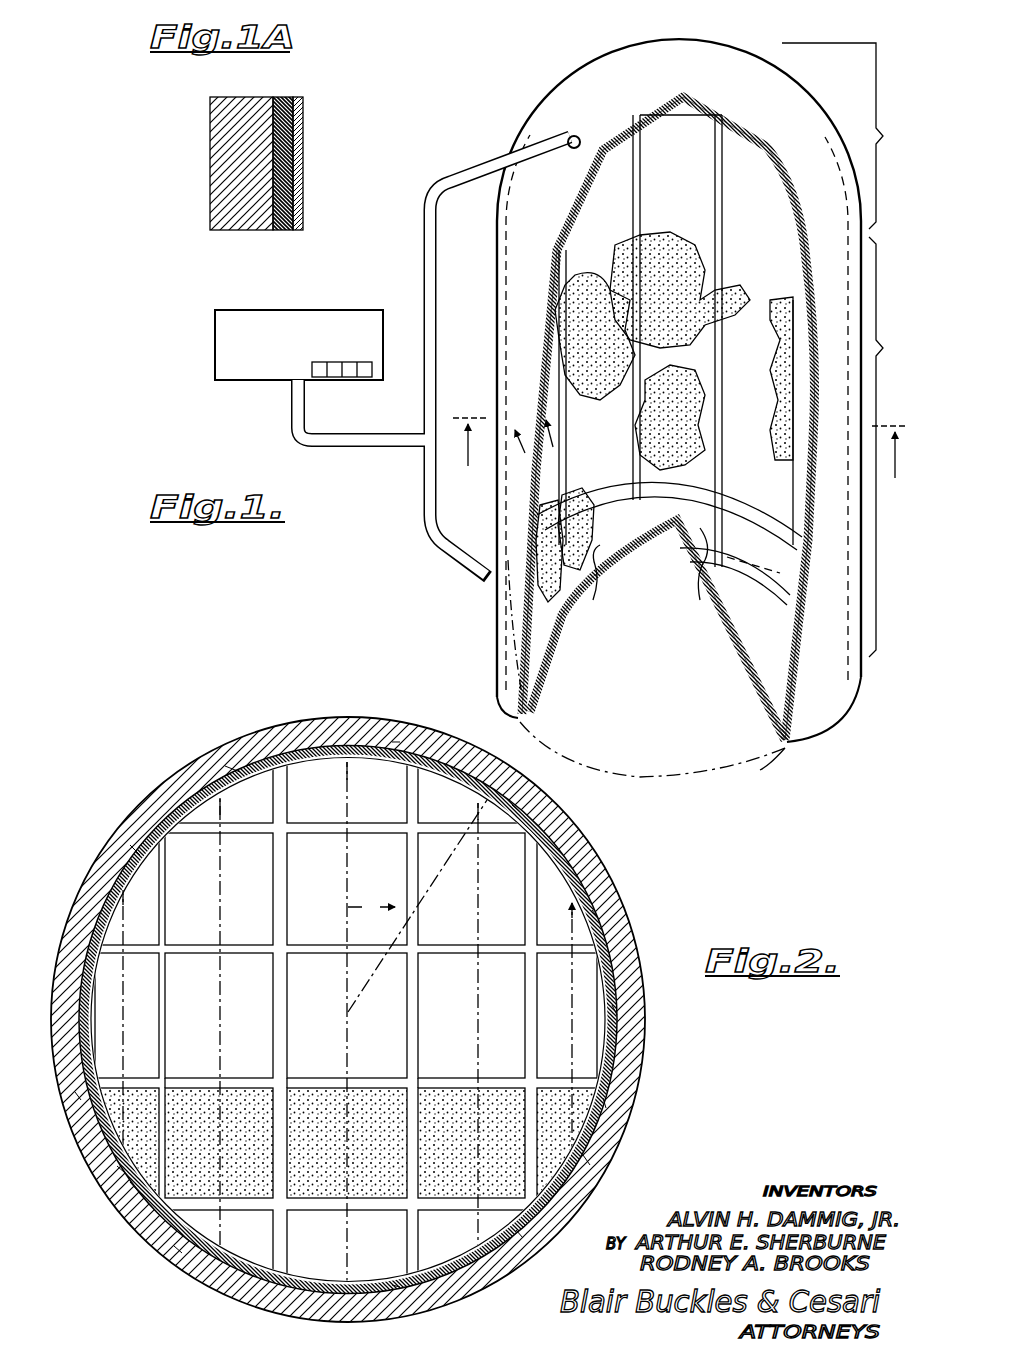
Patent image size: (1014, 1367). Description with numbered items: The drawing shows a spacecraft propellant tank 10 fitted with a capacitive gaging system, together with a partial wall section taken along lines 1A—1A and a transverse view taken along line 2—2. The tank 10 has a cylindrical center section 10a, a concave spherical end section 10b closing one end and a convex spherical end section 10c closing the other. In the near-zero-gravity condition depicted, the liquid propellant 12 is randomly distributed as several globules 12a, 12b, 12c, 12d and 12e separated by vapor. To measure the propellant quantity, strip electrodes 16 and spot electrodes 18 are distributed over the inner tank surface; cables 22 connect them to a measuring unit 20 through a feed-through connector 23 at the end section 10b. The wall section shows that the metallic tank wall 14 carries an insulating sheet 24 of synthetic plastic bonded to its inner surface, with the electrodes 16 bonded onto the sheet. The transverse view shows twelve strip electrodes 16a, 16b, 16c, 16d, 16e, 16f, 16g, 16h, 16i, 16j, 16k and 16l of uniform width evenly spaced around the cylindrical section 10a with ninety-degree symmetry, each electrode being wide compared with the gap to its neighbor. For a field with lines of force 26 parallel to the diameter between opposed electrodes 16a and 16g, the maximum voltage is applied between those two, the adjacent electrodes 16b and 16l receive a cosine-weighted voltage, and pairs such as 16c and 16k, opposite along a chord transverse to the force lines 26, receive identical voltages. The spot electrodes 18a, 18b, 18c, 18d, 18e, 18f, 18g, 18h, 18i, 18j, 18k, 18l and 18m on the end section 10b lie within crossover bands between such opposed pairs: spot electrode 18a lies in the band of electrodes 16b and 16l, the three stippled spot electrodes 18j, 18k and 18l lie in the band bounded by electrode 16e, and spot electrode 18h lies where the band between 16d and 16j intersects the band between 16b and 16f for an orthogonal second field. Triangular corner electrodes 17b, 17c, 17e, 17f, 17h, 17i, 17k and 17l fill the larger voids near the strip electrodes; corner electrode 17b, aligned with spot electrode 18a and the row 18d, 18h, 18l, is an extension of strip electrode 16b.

In FIG. 1, the tank 10 is at (548, 88).
In FIG. 1, the cylindrical center section 10a is at (901, 447).
In FIG. 1, the concave spherical end section 10b is at (860, 136).
In FIG. 1, the convex spherical end section 10c is at (766, 752).
In FIG. 1, the liquid propellant 12 is at (795, 448).
In FIG. 1, the propellant globule 12a is at (545, 520).
In FIG. 1, the propellant globule 12b is at (598, 484).
In FIG. 1, the propellant globule 12c is at (604, 272).
In FIG. 1, the propellant globule 12d is at (667, 242).
In FIG. 1, the propellant globule 12e is at (780, 383).
In FIG. 1A, the metallic tank wall 14 is at (218, 128).
In FIG. 2, the metallic tank wall 14 is at (264, 735).
In FIG. 1A, the strip electrodes 16 is at (303, 120).
In FIG. 1, the strip electrodes 16 is at (690, 165).
In FIG. 2, the strip electrode 16a is at (395, 745).
In FIG. 2, the strip electrode 16b is at (516, 808).
In FIG. 2, the strip electrode 16c is at (594, 915).
In FIG. 2, the strip electrode 16d is at (614, 1010).
In FIG. 2, the strip electrode 16e is at (604, 1104).
In FIG. 2, the strip electrode 16f is at (520, 1234).
In FIG. 2, the strip electrode 16g is at (395, 1288).
In FIG. 2, the strip electrode 16h is at (178, 1248).
In FIG. 2, the strip electrode 16i is at (132, 1185).
In FIG. 2, the strip electrode 16j is at (77, 1096).
In FIG. 2, the strip electrode 16k is at (133, 850).
In FIG. 2, the strip electrode 16l is at (232, 768).
In FIG. 2, the corner electrode 17b is at (471, 756).
In FIG. 2, the corner electrode 17c is at (597, 822).
In FIG. 2, the corner electrode 17e is at (588, 1160).
In FIG. 2, the corner electrode 17f is at (471, 1275).
In FIG. 2, the corner electrode 17h is at (219, 1275).
In FIG. 2, the corner electrode 17i is at (120, 1170).
In FIG. 2, the corner electrode 17k is at (99, 822).
In FIG. 2, the corner electrode 17l is at (219, 756).
In FIG. 1, the spot electrodes 18 is at (590, 600).
In FIG. 2, the spot electrode 18a is at (347, 756).
In FIG. 2, the spot electrode 18b is at (219, 889).
In FIG. 2, the spot electrode 18c is at (347, 889).
In FIG. 2, the spot electrode 18d is at (471, 889).
In FIG. 2, the spot electrode 18e is at (127, 1015).
In FIG. 2, the spot electrode 18f is at (219, 1015).
In FIG. 2, the spot electrode 18g is at (347, 1015).
In FIG. 2, the spot electrode 18h is at (471, 1015).
In FIG. 2, the spot electrode 18i is at (567, 1015).
In FIG. 2, the spot electrode 18j is at (219, 1143).
In FIG. 2, the spot electrode 18k is at (347, 1143).
In FIG. 2, the spot electrode 18l is at (471, 1143).
In FIG. 2, the spot electrode 18m is at (347, 1275).
In FIG. 1, the measuring unit 20 is at (212, 333).
In FIG. 1, the cables 22 is at (424, 420).
In FIG. 1, the feed-through connector 23 is at (560, 132).
In FIG. 1A, the insulating sheet 24 is at (283, 97).
In FIG. 2, the insulating sheet 24 is at (197, 793).
In FIG. 2, the lines of force 26 is at (162, 1080).
In FIG. 1, the section line 2— 2 is at (679, 435).
In FIG. 1, the section line 1A— 1A is at (533, 440).